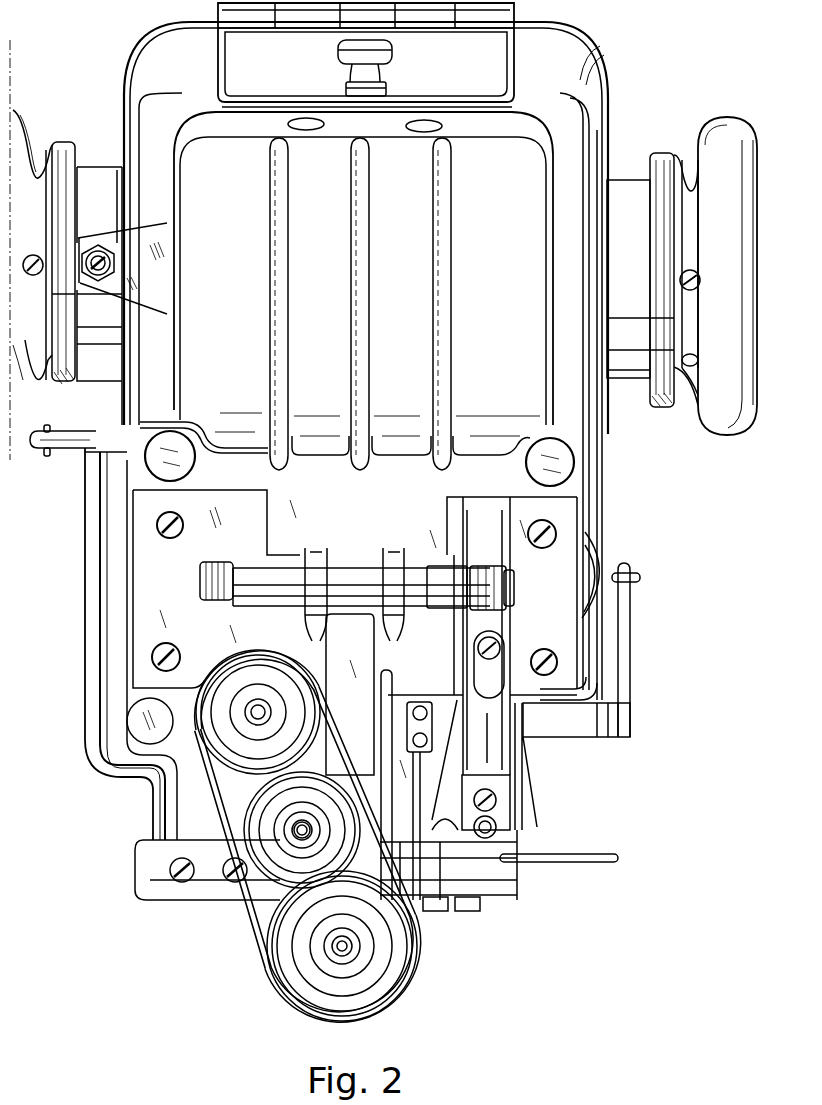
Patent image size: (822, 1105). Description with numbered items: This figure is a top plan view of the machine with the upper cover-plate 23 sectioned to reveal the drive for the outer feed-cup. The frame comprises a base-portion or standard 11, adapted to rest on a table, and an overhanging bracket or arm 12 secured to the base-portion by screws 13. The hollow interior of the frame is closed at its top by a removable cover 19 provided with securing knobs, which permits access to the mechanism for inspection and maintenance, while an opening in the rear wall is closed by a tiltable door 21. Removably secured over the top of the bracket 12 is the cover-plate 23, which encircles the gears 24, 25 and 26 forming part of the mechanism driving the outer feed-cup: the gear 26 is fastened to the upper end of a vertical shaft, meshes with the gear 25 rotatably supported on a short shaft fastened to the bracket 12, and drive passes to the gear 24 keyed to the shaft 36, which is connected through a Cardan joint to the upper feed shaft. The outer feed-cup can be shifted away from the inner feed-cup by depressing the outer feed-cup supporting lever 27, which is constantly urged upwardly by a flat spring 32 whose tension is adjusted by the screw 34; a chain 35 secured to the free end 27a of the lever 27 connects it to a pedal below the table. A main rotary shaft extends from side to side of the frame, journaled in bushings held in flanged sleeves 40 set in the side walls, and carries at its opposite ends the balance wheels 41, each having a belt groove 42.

The base-portion or standard 11 is at (585, 77).
The overhanging bracket or arm 12 is at (140, 663).
The screws 13 is at (158, 530).
The removable cover 19 is at (205, 200).
The tiltable door 21 is at (224, 38).
The cover-plate 23 is at (255, 916).
The gear 24 is at (320, 997).
The gear 25 is at (253, 815).
The gear 26 is at (304, 691).
The outer feed-cup supporting lever 27 is at (100, 548).
The free end 27a is at (42, 449).
The flat spring 32 is at (88, 404).
The screw 34 is at (100, 250).
The chain 35 is at (47, 457).
The shaft 36 is at (302, 830).
The flanged sleeves 40 is at (98, 180).
The balance wheels 41 is at (17, 133).
The belt groove 42 is at (32, 163).